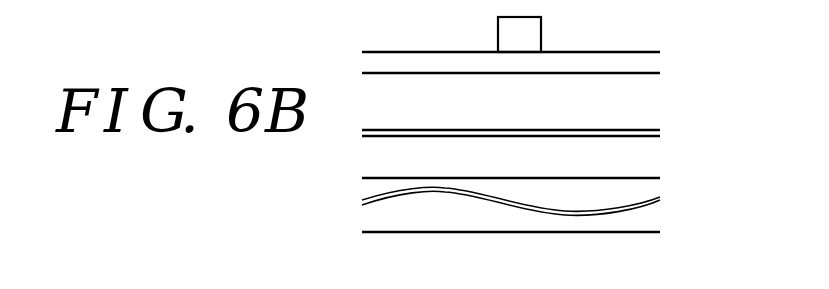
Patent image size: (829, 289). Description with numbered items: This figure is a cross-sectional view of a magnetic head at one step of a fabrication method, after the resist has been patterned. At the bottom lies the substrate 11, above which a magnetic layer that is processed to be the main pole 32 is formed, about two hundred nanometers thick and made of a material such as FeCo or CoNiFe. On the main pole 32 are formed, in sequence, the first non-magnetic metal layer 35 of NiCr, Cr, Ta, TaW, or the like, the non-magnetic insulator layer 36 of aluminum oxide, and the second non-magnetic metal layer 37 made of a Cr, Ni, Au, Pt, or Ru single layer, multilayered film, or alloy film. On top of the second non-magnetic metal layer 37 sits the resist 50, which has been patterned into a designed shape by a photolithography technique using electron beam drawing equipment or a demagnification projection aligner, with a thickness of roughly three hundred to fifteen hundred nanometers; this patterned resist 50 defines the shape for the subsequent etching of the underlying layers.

The resist 50 is at (523, 34).
The second non-magnetic metal layer 37 is at (627, 65).
The non-magnetic insulator layer 36 is at (627, 94).
The first non-magnetic metal layer 35 is at (660, 135).
The main pole 32 is at (627, 164).
The substrate 11 is at (627, 220).